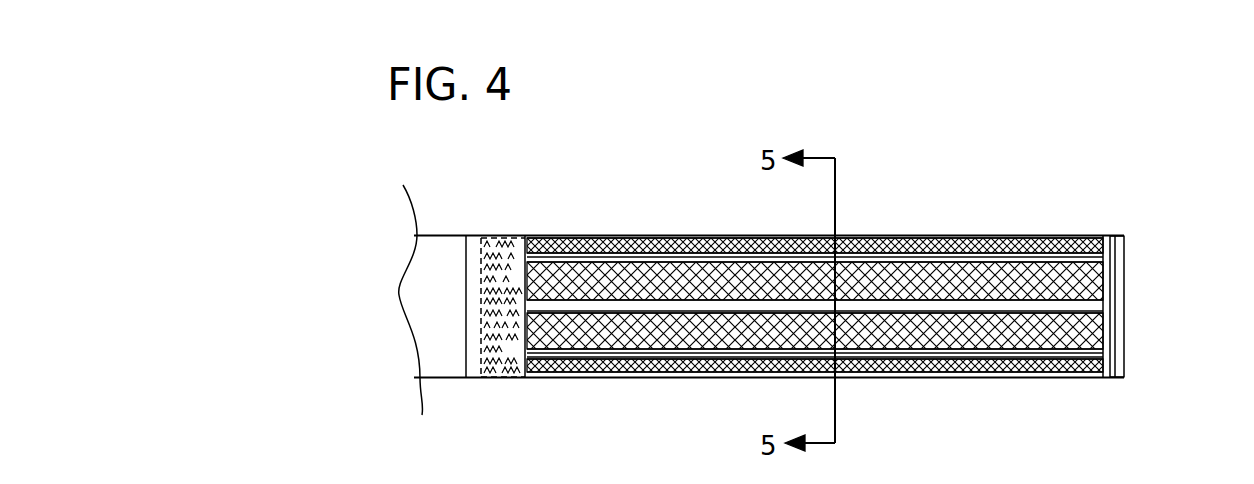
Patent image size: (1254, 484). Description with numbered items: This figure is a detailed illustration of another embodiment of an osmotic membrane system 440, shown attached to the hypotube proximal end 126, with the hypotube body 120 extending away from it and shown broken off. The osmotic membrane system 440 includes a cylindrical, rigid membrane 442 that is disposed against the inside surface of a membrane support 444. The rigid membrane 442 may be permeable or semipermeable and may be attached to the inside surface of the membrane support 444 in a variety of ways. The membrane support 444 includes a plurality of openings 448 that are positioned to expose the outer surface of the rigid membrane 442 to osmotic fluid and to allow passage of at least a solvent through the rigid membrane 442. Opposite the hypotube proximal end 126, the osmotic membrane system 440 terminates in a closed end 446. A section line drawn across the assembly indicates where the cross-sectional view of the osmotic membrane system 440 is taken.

The catheter shaft / elongate body 120 is at (437, 368).
The hypotube proximal end 126 is at (432, 228).
The osmotic membrane system 440 is at (1030, 147).
The rigid membrane 442 is at (580, 246).
The membrane support 444 is at (877, 240).
The closed end 446 is at (1118, 328).
The openings 448 is at (566, 352).